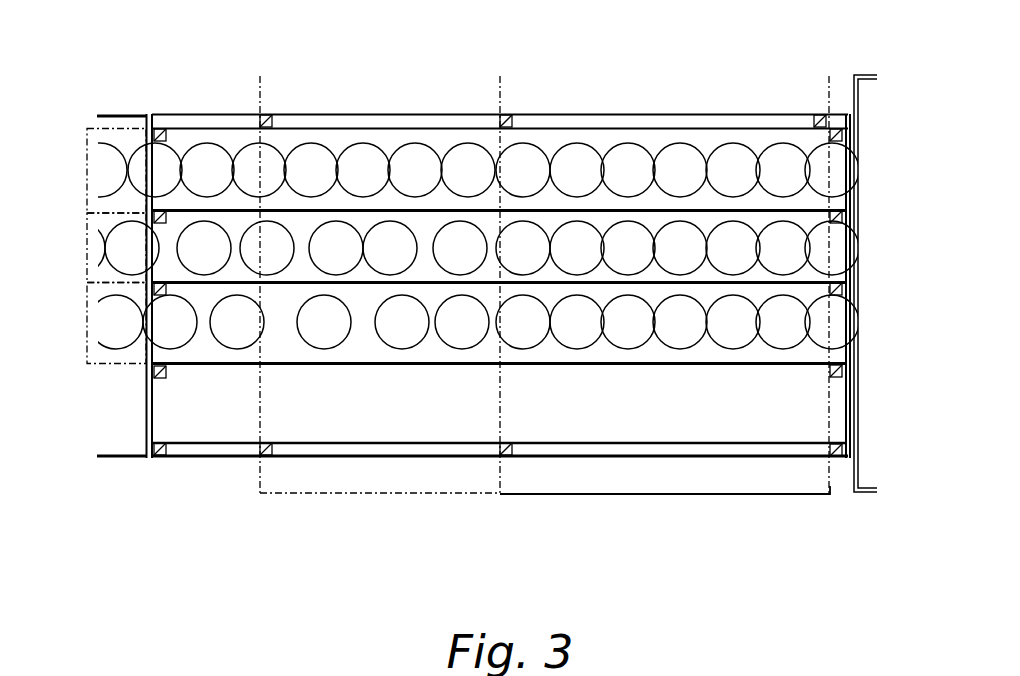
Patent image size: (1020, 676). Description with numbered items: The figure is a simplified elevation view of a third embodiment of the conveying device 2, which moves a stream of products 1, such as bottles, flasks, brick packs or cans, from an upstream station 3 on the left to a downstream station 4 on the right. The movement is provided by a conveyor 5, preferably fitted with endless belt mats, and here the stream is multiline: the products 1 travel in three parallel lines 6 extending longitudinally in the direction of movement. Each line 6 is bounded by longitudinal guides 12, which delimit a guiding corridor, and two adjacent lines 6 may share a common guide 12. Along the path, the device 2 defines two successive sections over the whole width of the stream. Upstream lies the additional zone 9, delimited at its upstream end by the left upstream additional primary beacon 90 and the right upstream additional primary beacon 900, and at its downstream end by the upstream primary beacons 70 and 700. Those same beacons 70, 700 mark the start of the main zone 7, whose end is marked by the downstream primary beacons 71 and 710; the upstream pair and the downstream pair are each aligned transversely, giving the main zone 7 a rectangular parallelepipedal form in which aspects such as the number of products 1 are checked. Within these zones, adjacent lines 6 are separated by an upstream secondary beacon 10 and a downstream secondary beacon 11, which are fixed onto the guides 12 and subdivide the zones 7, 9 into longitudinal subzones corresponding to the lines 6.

The product 1 is at (238, 327).
The conveying device 2 is at (168, 104).
The upstream station 3 is at (127, 445).
The downstream station 4 is at (867, 480).
The conveyor 5 is at (448, 450).
The line 6 is at (87, 163).
The main zone 7 is at (666, 495).
The additional zone 9 is at (380, 515).
The upstream secondary beacon 10 is at (157, 370).
The downstream secondary beacon 11 is at (835, 370).
The longitudinal guide 12 is at (340, 444).
The upstream primary beacon 70 is at (505, 126).
The downstream primary beacon 71 is at (828, 126).
The left upstream additional primary beacon 90 is at (266, 114).
The upstream primary beacon 700 is at (505, 452).
The downstream primary beacon 710 is at (823, 450).
The right upstream additional primary beacon 900 is at (265, 458).